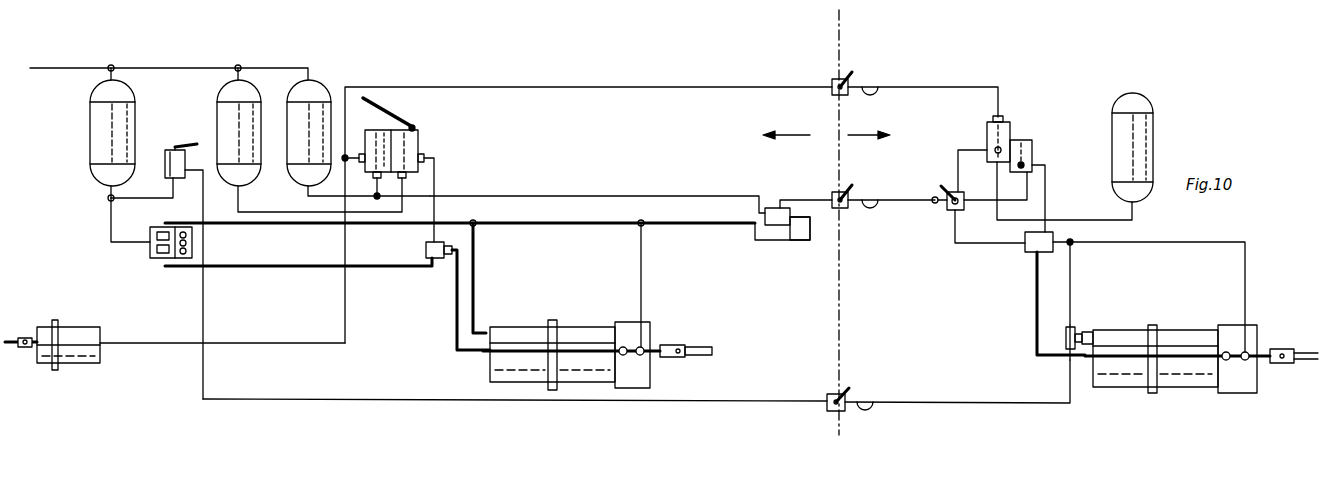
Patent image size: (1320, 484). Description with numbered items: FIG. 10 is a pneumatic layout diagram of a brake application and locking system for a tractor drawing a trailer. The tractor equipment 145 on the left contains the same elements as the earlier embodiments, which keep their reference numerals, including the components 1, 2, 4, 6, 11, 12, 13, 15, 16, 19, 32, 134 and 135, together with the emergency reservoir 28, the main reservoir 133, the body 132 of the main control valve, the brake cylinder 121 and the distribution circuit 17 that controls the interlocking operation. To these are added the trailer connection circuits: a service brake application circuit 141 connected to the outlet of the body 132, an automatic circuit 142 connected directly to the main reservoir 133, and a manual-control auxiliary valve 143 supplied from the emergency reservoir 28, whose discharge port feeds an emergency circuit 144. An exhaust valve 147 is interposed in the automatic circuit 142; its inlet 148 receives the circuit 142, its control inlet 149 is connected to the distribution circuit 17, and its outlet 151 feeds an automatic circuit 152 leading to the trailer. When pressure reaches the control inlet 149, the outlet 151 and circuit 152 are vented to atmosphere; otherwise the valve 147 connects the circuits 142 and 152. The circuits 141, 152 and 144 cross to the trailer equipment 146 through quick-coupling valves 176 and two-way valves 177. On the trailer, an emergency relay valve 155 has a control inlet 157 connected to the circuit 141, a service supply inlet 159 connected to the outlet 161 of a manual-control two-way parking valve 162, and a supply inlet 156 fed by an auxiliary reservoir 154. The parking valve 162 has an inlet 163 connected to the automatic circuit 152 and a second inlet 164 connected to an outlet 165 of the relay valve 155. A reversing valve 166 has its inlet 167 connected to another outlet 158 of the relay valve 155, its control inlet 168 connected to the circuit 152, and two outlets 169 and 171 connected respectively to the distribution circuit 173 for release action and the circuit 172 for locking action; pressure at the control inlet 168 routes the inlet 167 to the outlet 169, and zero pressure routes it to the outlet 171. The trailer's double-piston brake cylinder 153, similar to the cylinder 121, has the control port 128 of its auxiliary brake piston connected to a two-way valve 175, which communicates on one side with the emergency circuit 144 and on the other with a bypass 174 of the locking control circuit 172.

The control cylinder 1 is at (85, 337).
The control line 2 is at (250, 343).
The hand pump lever 4 is at (388, 113).
The supply line 6 is at (165, 68).
The pressure line 11 is at (455, 296).
The connecting fitting 12 is at (426, 250).
The pump delivery line 13 is at (442, 178).
The piston rod eye 15 is at (1250, 352).
The piston rod pin 16 is at (1226, 352).
The distribution circuit 17 is at (528, 225).
The control valve block 19 is at (150, 249).
The emergency reservoir 28 is at (95, 131).
The feed line 32 is at (476, 278).
The brake cylinder 121 is at (534, 330).
The control port of the auxiliary brake piston 128 is at (1090, 332).
The body of the main control valve 132 is at (378, 140).
The main reservoir 133 is at (316, 95).
The pump outlet 134 is at (424, 146).
The reservoir 135 is at (217, 108).
The service brake application circuit 141 is at (530, 87).
The automatic circuit 142 is at (562, 196).
The manual-control auxiliary valve 143 is at (166, 124).
The emergency circuit 144 is at (345, 399).
The equipment of the tractor 145 is at (800, 127).
The equipment of the trailer 146 is at (867, 127).
The exhaust valve 147 is at (772, 228).
The inlet 148 is at (758, 212).
The control inlet 149 is at (795, 228).
The outlet 151 is at (779, 206).
The automatic circuit 152 is at (812, 198).
The double-piston brake cylinder 153 is at (1174, 384).
The auxiliary reservoir 154 is at (1155, 138).
The emergency relay valve 155 is at (985, 130).
The supply inlet 156 is at (996, 162).
The control inlet 157 is at (1004, 116).
The outlet 158 is at (1034, 160).
The service supply inlet 159 is at (1020, 170).
The outlet 161 is at (966, 204).
The manual-control two-way parking valve 162 is at (952, 211).
The inlet 163 is at (939, 190).
The second inlet 164 is at (955, 192).
The outlet 165 is at (1013, 146).
The reversing valve 166 is at (1032, 252).
The inlet 167 is at (1056, 240).
The control inlet 168 is at (1025, 246).
The outlet 169 is at (1039, 260).
The outlet 171 is at (1073, 250).
The locking control circuit 172 is at (1166, 244).
The distribution circuit 173 is at (1035, 325).
The bypass 174 is at (1073, 298).
The two-way valve 175 is at (1066, 338).
The quick-coupling valves 176 is at (878, 96).
The two-way valves 177 is at (832, 88).